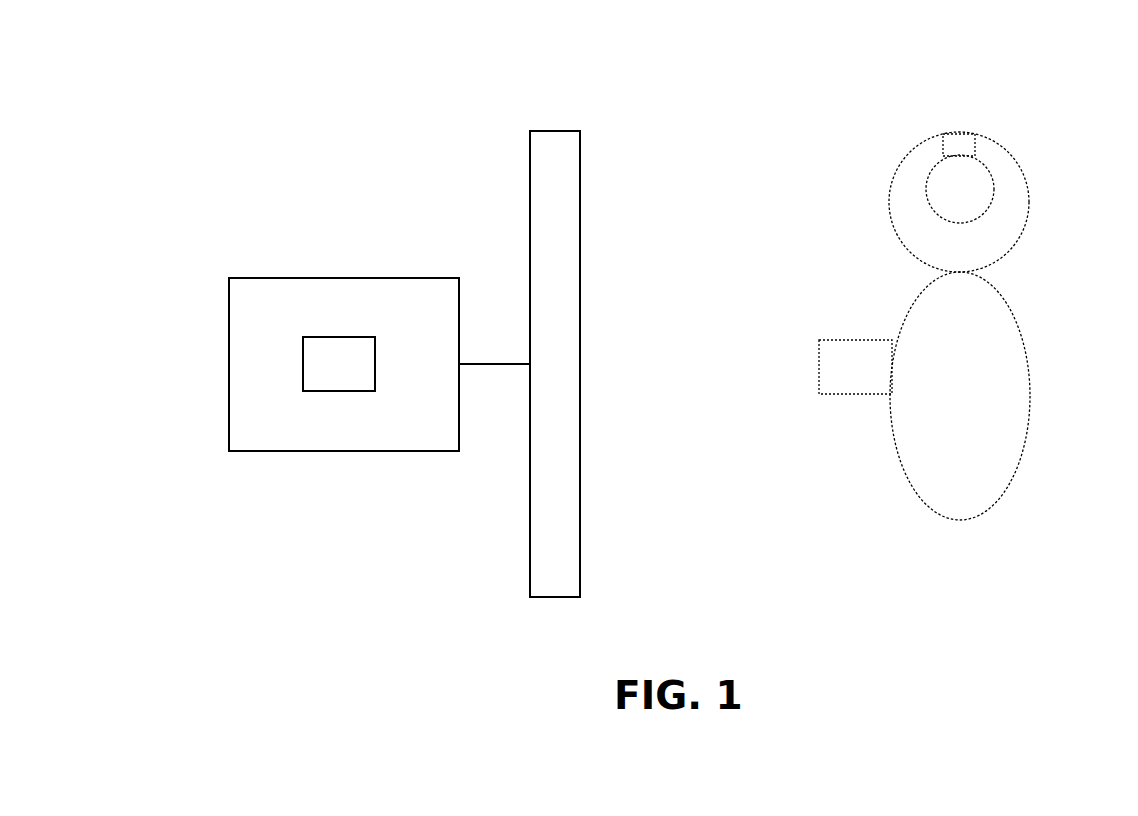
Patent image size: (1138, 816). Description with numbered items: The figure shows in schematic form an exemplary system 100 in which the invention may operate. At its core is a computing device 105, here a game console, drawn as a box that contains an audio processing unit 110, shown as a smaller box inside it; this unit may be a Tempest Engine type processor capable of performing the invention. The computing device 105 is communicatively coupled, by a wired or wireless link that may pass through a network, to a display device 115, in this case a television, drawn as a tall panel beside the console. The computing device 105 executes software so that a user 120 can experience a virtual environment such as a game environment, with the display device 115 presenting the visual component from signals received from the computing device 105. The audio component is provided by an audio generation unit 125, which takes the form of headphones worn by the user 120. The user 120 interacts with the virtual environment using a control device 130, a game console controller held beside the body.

The system 100 is at (340, 80).
The computing device 105 is at (254, 292).
The audio processing unit 110 is at (309, 371).
The display device 115 is at (552, 143).
The user 120 is at (1007, 371).
The audio generation unit 125 is at (961, 138).
The control device 130 is at (833, 357).